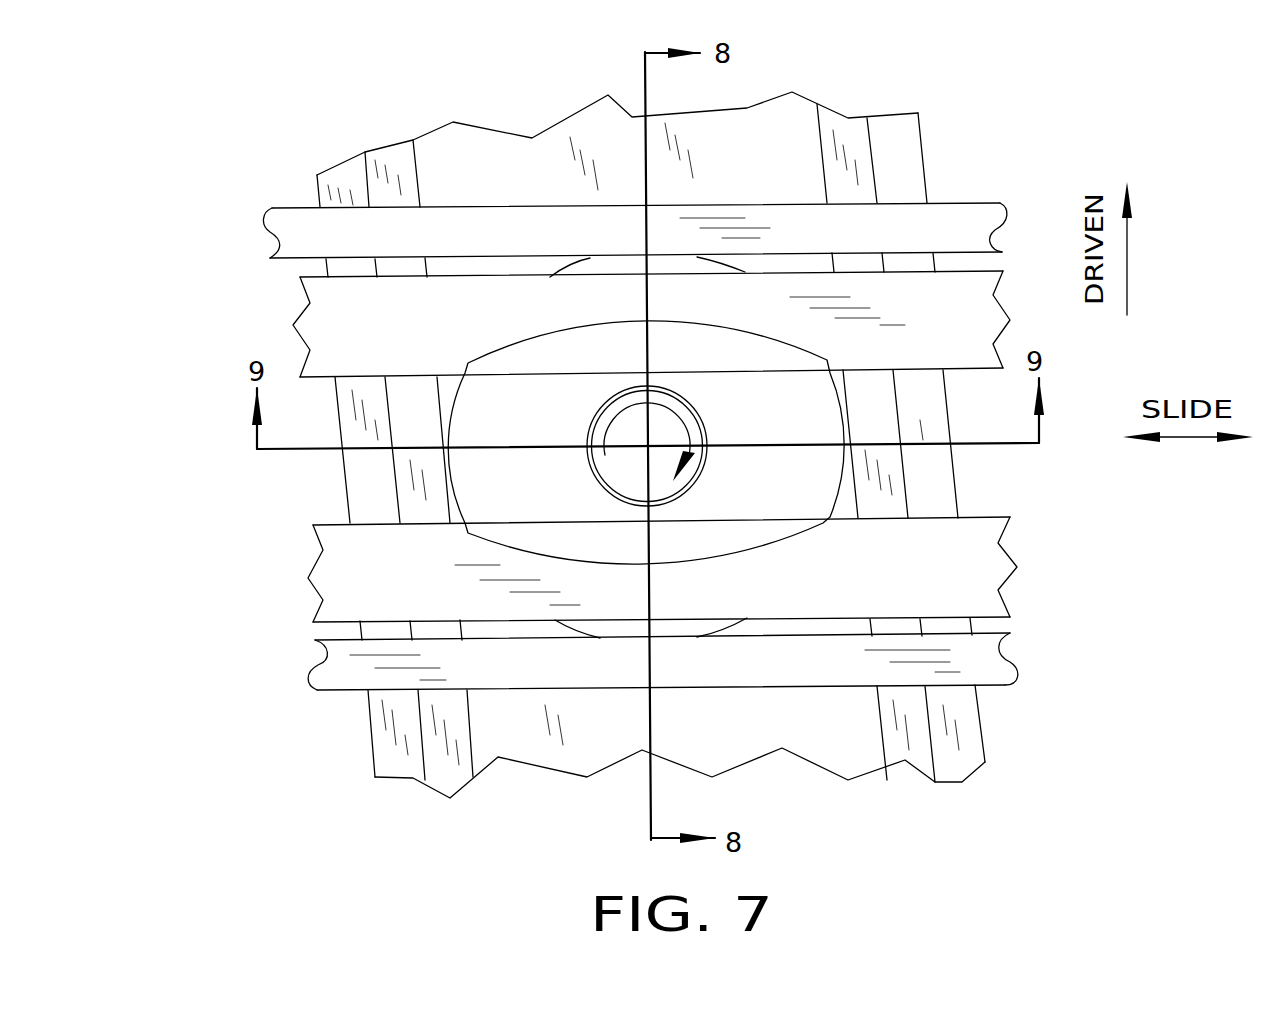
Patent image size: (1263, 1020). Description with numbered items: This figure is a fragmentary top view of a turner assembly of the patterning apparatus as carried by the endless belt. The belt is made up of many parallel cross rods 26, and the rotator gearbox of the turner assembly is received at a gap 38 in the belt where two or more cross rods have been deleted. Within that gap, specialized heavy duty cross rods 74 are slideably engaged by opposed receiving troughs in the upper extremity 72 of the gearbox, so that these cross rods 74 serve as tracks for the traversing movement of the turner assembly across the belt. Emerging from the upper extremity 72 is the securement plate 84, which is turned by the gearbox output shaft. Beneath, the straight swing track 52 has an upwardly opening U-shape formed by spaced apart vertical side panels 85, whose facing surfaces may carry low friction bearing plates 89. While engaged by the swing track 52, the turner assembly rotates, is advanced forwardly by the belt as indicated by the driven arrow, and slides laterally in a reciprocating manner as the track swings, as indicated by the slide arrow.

The cross rods 26 is at (268, 233).
The gap 38 is at (980, 488).
The swing track 52 is at (790, 737).
The upper extremity 72 is at (765, 523).
The specialized heavy duty cross rods 74 is at (396, 342).
The securement plate 84 is at (625, 398).
The vertical side panels 85 is at (347, 153).
The low friction bearing plates 89 is at (388, 143).